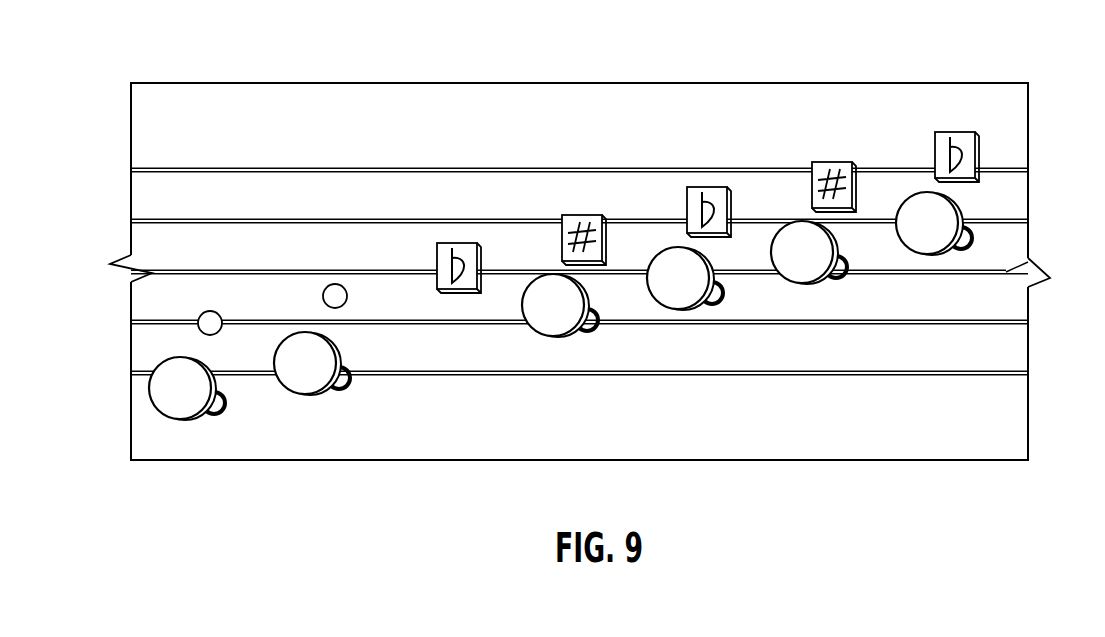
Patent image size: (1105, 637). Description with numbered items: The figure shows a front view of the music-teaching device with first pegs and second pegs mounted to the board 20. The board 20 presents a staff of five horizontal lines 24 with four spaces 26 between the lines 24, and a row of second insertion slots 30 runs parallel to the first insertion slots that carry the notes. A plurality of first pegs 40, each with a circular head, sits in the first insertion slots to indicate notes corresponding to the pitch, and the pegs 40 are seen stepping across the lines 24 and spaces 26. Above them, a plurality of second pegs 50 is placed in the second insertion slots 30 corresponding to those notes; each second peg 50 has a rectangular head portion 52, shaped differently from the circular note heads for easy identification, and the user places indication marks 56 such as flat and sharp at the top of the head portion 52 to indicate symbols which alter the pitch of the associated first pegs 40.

The board 20 is at (1010, 437).
The horizontal lines 24 is at (550, 168).
The spaces 26 is at (893, 350).
The second insertion slots 30 is at (335, 284).
The first pegs 40 is at (552, 325).
The second pegs 50 is at (694, 173).
The head portion 52 is at (708, 188).
The indication marks 56 is at (460, 257).